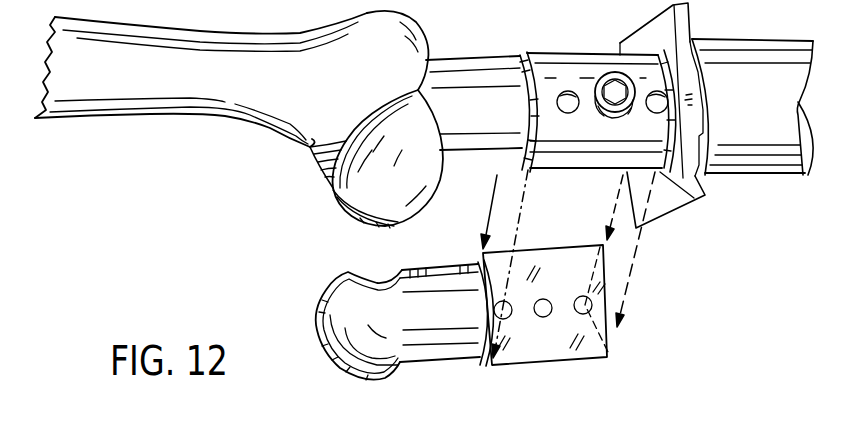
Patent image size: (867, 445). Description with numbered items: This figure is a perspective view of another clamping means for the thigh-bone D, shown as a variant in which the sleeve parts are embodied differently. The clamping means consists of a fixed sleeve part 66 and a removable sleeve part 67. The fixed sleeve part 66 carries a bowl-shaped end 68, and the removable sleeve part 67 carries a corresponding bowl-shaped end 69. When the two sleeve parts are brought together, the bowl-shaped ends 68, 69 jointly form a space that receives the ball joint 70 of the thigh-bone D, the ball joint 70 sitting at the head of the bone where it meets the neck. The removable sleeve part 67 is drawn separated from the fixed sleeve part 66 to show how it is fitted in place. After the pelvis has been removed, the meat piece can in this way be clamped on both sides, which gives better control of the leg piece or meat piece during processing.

The thigh-bone D is at (234, 57).
The fixed sleeve part 66 is at (479, 76).
The removable sleeve part 67 is at (438, 338).
The bowl-shaped end 68 is at (352, 184).
The bowl-shaped end 69 is at (340, 343).
The ball joint 70 is at (311, 147).